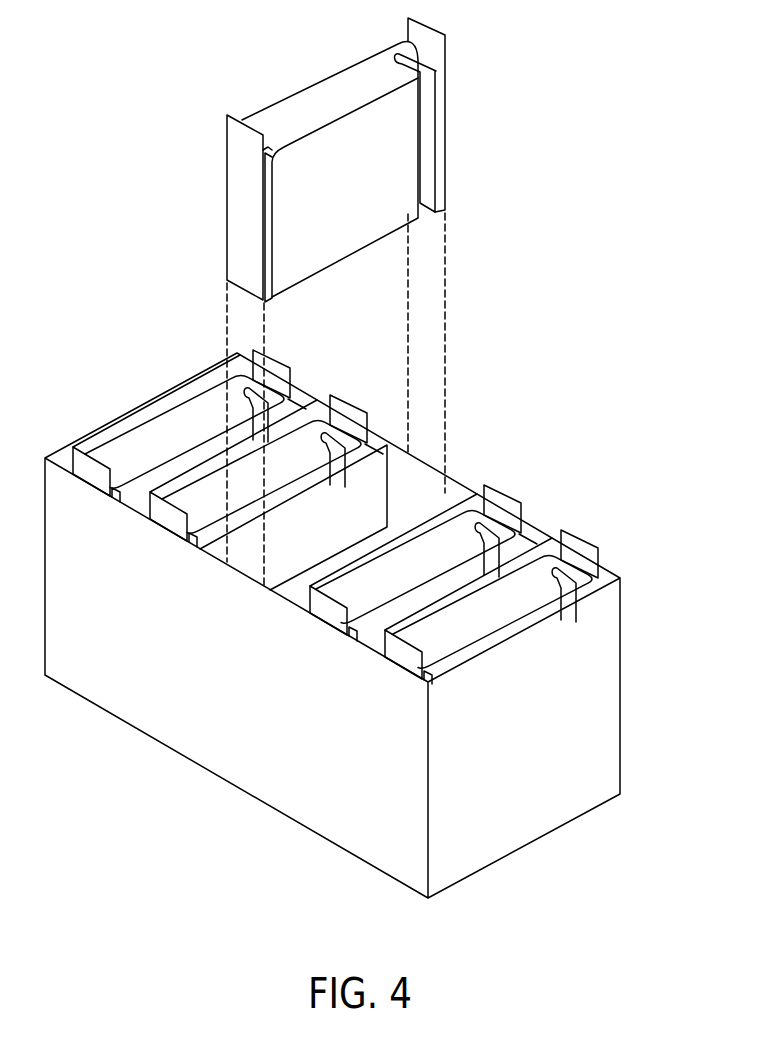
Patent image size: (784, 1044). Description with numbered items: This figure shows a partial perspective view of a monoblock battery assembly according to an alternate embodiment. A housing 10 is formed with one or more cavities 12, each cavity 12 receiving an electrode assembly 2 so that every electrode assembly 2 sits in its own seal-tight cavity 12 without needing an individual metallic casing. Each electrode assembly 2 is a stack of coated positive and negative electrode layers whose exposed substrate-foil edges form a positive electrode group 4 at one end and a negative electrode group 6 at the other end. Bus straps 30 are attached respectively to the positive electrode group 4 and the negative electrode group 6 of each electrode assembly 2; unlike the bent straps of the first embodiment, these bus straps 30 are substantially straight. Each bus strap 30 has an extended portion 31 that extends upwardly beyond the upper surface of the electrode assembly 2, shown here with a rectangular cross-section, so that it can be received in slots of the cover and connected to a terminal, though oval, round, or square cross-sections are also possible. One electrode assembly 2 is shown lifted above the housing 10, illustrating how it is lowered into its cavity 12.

The electrode assembly 2 is at (405, 182).
The positive electrode group 4 is at (440, 145).
The negative electrode group 6 is at (269, 153).
The housing 10 is at (622, 689).
The cavity 12 is at (428, 463).
The bus strap 30 is at (227, 213).
The extended portion 31 is at (438, 46).